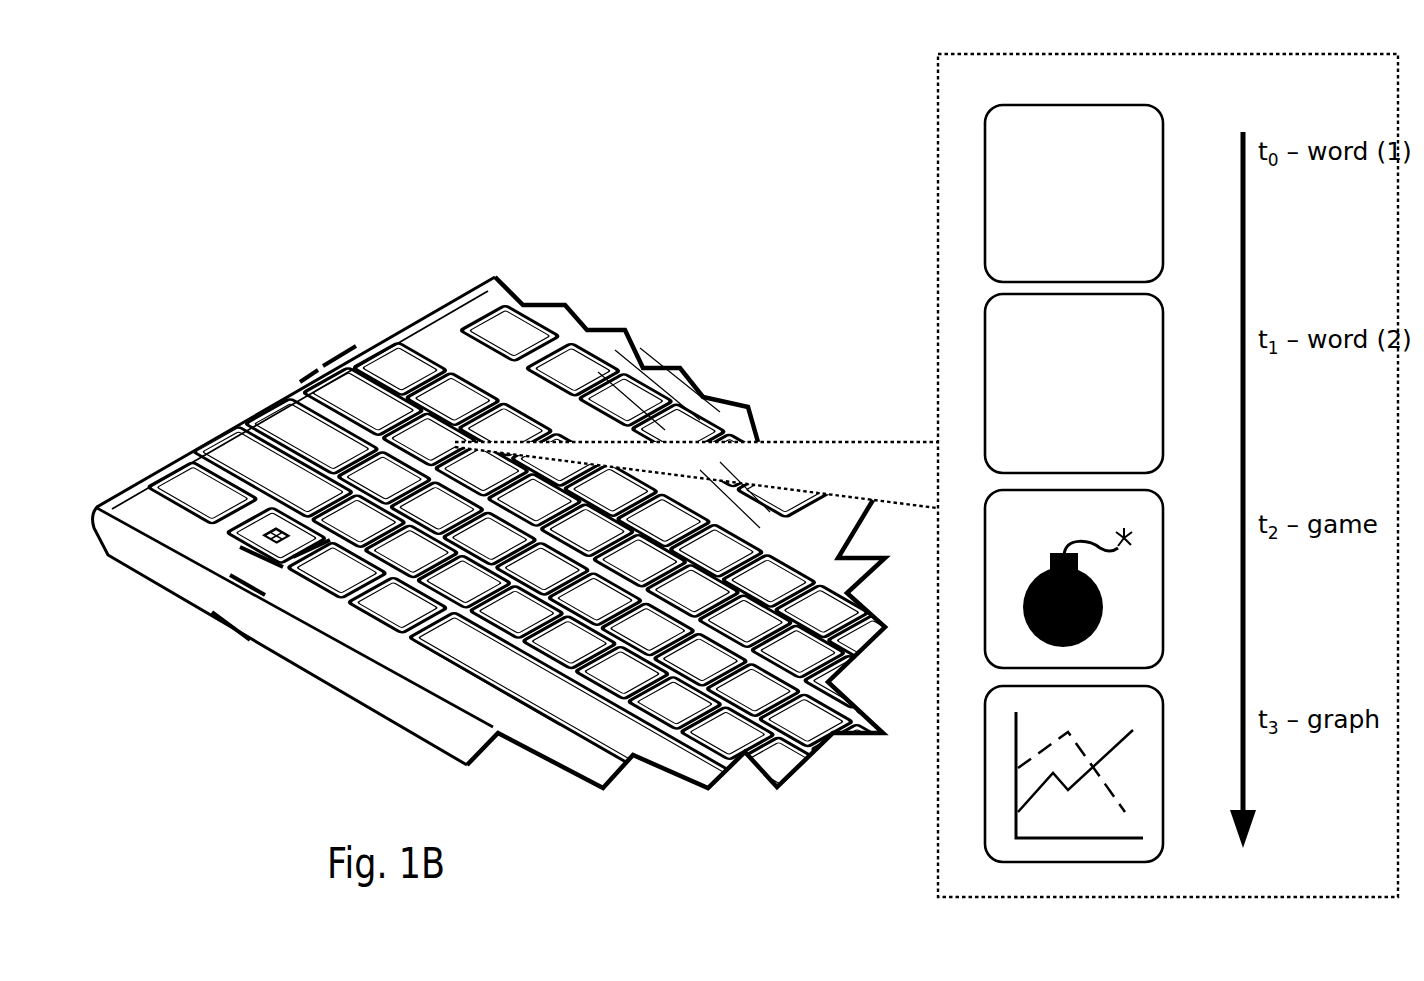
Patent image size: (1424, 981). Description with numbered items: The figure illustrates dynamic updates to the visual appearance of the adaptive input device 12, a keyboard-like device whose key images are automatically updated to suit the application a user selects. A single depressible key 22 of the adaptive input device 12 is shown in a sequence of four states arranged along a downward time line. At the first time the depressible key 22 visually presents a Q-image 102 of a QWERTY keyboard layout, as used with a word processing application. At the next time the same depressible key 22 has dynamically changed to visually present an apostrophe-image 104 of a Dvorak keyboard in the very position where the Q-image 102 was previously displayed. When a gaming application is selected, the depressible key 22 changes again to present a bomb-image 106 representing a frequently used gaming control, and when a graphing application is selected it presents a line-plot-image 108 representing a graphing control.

The adaptive input device 12 is at (553, 268).
The depressible key 22 is at (1150, 113).
The Q-image 102 is at (1138, 173).
The apostrophe-image 104 is at (1138, 359).
The bomb-image 106 is at (1138, 575).
The line-plot-image 108 is at (1138, 769).